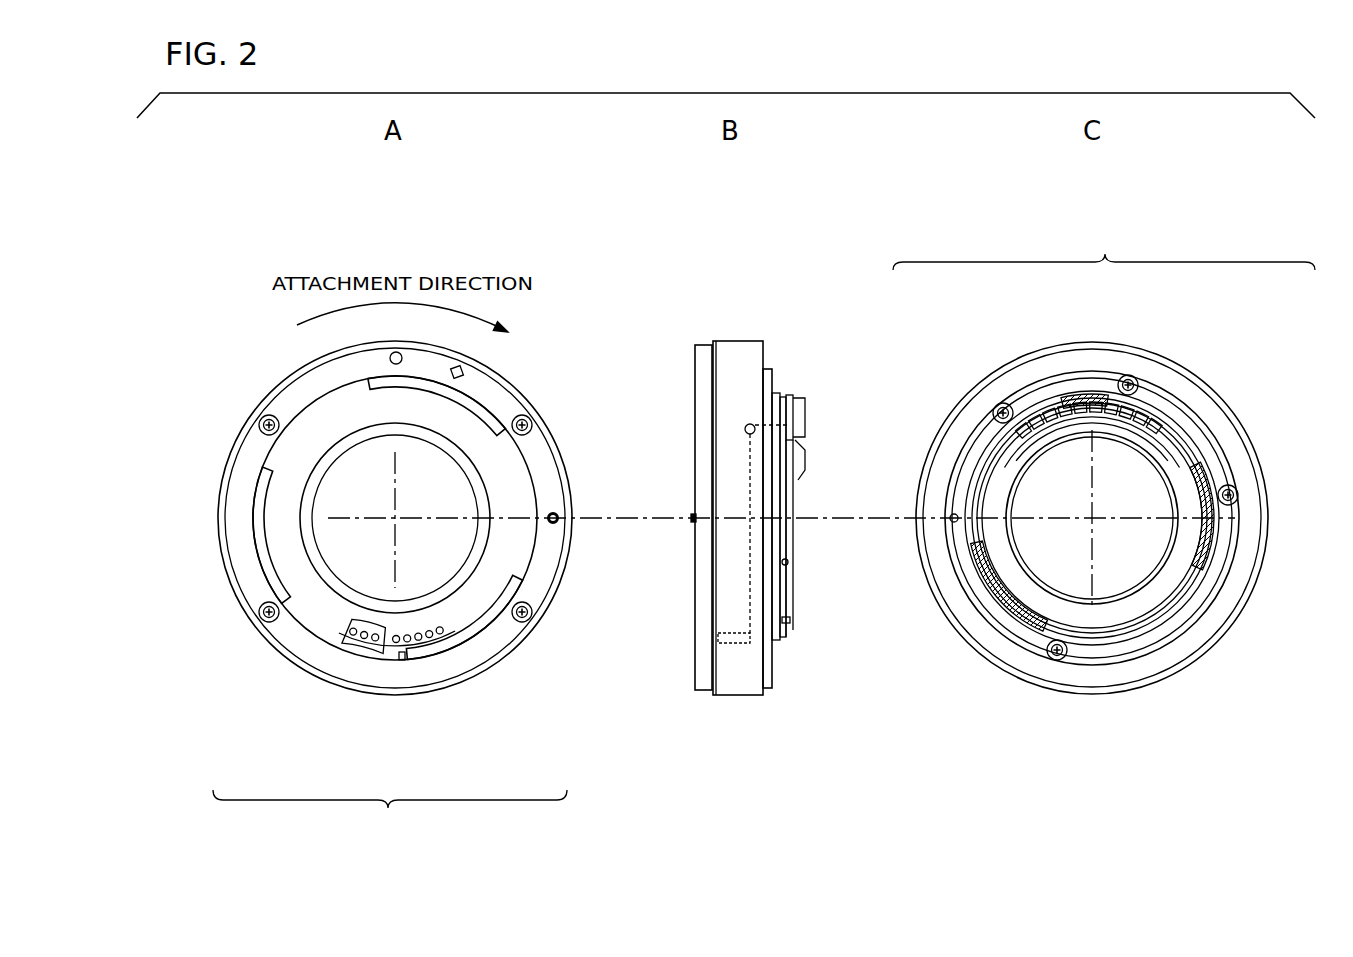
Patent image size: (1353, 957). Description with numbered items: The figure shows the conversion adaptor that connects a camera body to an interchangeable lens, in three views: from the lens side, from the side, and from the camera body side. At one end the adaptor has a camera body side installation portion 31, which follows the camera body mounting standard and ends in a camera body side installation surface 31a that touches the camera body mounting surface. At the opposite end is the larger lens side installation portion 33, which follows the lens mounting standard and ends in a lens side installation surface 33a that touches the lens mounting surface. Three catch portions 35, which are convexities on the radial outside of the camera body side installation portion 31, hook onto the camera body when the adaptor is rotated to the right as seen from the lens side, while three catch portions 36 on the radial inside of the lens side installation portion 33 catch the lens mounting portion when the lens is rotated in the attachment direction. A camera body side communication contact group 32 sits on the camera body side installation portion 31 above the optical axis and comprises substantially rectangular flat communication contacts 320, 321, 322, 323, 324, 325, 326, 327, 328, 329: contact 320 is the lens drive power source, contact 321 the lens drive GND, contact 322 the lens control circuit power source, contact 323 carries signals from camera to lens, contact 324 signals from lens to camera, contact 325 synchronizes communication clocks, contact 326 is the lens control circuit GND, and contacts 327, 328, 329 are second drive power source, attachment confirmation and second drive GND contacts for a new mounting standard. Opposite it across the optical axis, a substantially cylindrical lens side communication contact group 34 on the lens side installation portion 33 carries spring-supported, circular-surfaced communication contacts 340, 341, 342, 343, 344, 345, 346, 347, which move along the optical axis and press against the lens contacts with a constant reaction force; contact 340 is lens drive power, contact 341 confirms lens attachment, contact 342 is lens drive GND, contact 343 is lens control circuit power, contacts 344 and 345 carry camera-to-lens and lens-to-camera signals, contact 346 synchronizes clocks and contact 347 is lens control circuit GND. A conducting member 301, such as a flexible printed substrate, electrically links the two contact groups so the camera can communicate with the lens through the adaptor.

The camera body side installation portion 31 is at (1212, 590).
The camera body side installation surface 31a is at (772, 382).
The camera body side communication contact group 32 is at (785, 400).
The lens side installation portion 33 is at (283, 404).
The lens side installation surface 33a is at (695, 380).
The lens side communication contact group 34 is at (733, 642).
The catch portion 35 is at (997, 427).
The catch portion 36 is at (472, 402).
The conducting member 301 is at (750, 627).
The communication contact 320 is at (1000, 388).
The communication contact 321 is at (1012, 400).
The communication contact 322 is at (1045, 405).
The communication contact 323 is at (1062, 400).
The communication contact 324 is at (1087, 395).
The communication contact 325 is at (1106, 400).
The communication contact 326 is at (1127, 405).
The communication contact 327 is at (1150, 410).
The communication contact 328 is at (1172, 420).
The communication contact 329 is at (1200, 430).
The communication contact 340 is at (353, 636).
The communication contact 341 is at (364, 640).
The communication contact 342 is at (375, 642).
The communication contact 343 is at (396, 644).
The communication contact 344 is at (407, 643).
The communication contact 345 is at (418, 641).
The communication contact 346 is at (429, 638).
The communication contact 347 is at (440, 635).